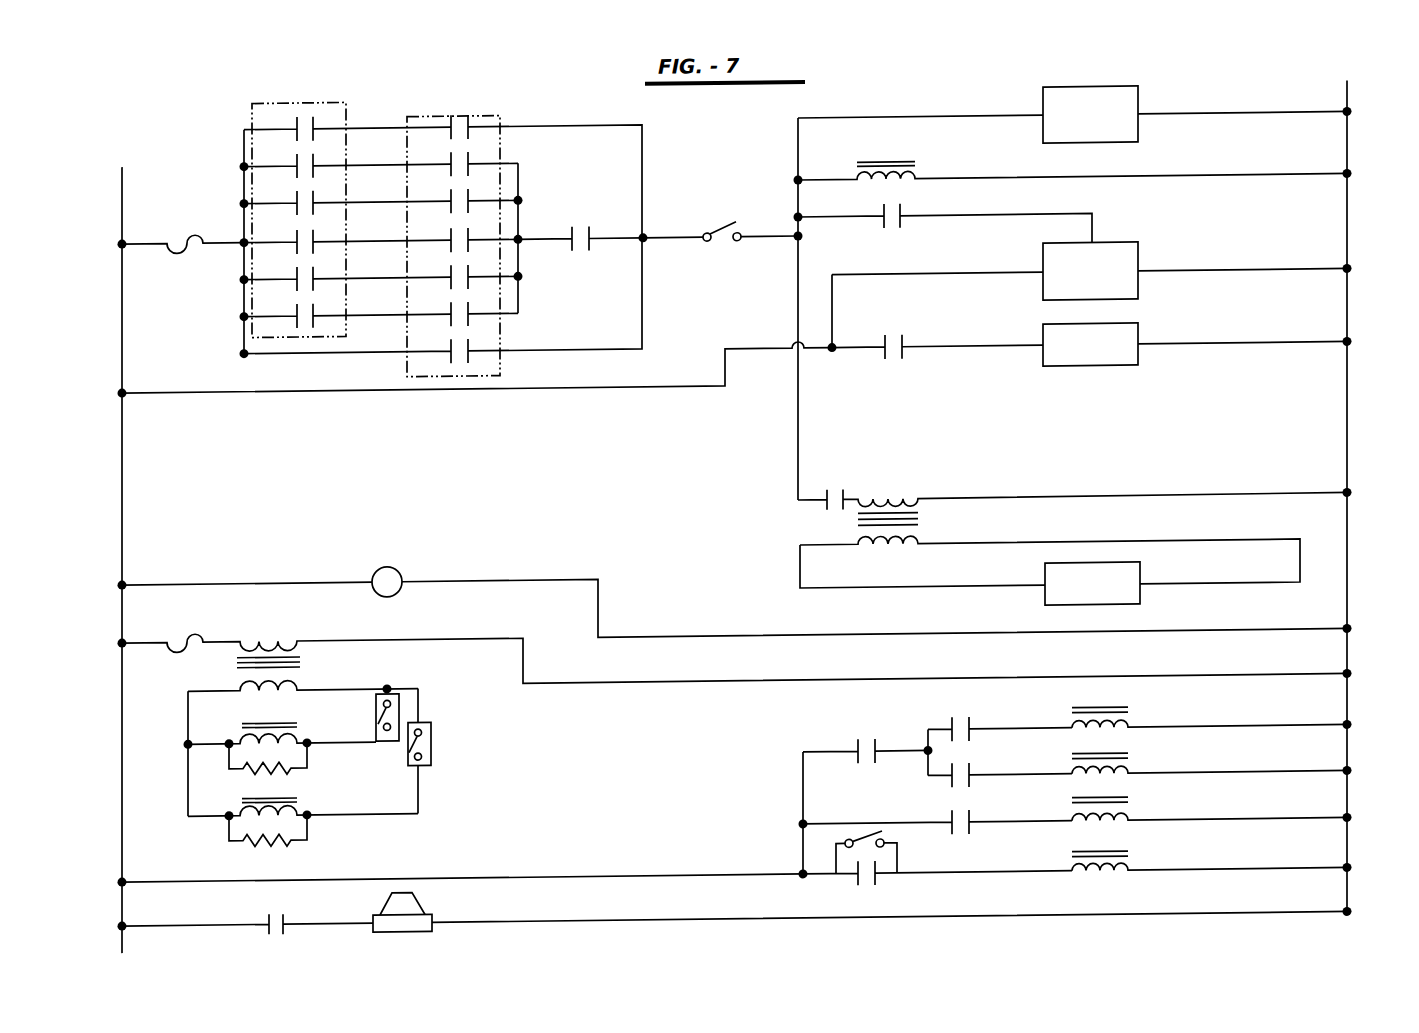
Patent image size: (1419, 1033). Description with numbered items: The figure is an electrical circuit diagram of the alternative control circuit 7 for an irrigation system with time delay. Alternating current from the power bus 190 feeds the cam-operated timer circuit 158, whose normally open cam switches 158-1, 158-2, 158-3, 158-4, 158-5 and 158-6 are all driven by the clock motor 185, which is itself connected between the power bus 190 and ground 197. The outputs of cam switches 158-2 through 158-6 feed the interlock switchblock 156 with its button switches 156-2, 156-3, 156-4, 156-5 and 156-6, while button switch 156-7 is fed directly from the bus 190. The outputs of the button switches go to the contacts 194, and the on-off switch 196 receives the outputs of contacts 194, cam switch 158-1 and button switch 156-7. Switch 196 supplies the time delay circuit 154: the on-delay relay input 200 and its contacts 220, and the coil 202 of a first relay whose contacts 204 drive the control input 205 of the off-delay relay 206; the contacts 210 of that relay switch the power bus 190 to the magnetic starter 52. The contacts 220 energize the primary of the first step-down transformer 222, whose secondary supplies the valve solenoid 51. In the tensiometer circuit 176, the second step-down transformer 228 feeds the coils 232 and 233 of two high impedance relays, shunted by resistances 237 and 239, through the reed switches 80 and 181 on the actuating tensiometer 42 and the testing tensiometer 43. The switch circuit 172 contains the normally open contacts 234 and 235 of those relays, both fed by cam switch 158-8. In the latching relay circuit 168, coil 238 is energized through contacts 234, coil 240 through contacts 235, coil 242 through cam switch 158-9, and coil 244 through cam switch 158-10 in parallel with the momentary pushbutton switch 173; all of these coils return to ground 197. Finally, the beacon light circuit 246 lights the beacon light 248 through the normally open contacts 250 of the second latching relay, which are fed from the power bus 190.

The A.C. power bus 190 is at (122, 190).
The cam-operated timer circuit 158 is at (352, 83).
The cam switch 158-1 is at (316, 119).
The cam switch 158-2 is at (316, 156).
The cam switch 158-3 is at (316, 193).
The cam switch 158-4 is at (316, 232).
The cam switch 158-5 is at (316, 269).
The cam switch 158-6 is at (316, 306).
The interlock switchblock 156 is at (490, 100).
The button switch 156-2 is at (471, 156).
The button switch 156-3 is at (471, 195).
The button switch 156-4 is at (471, 233).
The button switch 156-5 is at (471, 271).
The button switch 156-6 is at (471, 308).
The button switch 156-7 is at (471, 344).
The contacts of first latching relay 194 is at (592, 230).
The on-off switch 196 is at (730, 224).
The time delay circuit 154 is at (998, 101).
The ground 197 is at (1349, 101).
The electrical control circuit 7 is at (1360, 359).
The on-delay relay input 200 is at (1125, 90).
The coil of first relay 202 is at (907, 164).
The contacts of first relay 204 is at (902, 228).
The control input of off-delay relay 205 is at (1072, 267).
The off-delay relay 206 is at (1140, 260).
The contacts of off-delay relay 210 is at (905, 348).
The magnetic starter 52 is at (1105, 370).
The contacts of on-delay relay 220 is at (828, 495).
The first step-down transformer 222 is at (920, 522).
The solenoid 51 is at (1142, 607).
The clock motor 185 is at (396, 563).
The second step-down transformer 228 is at (300, 657).
The tensiometer circuit 176 is at (342, 773).
The coil of first high impedance relay 232 is at (258, 717).
The coil of second high impedance relay 233 is at (262, 793).
The resistance 237 is at (270, 764).
The resistance 239 is at (270, 841).
The actuating tensiometer 42 is at (400, 708).
The switch 43 is at (431, 751).
The reed switch 80 is at (378, 719).
The reed switch 181 is at (408, 750).
The latching relay circuit 168 is at (1073, 794).
The first cam switch 158-8 is at (868, 744).
The second cam switch 158-9 is at (961, 819).
The third cam switch 158-10 is at (869, 882).
The switch circuit 172 is at (935, 727).
The momentary-contact pushbutton switch 173 is at (866, 838).
The contacts of first high impedance relay 234 is at (961, 725).
The contacts of second high impedance relay 235 is at (961, 772).
The coil of first latching relay 238 is at (1118, 714).
The coil of second latching relay 240 is at (1118, 760).
The coil of third latching relay 242 is at (1118, 805).
The coil of fourth latching relay 244 is at (1118, 857).
The beacon light 248 is at (422, 906).
The beacon light circuit 246 is at (327, 936).
The contacts of second latching relay 250 is at (266, 932).